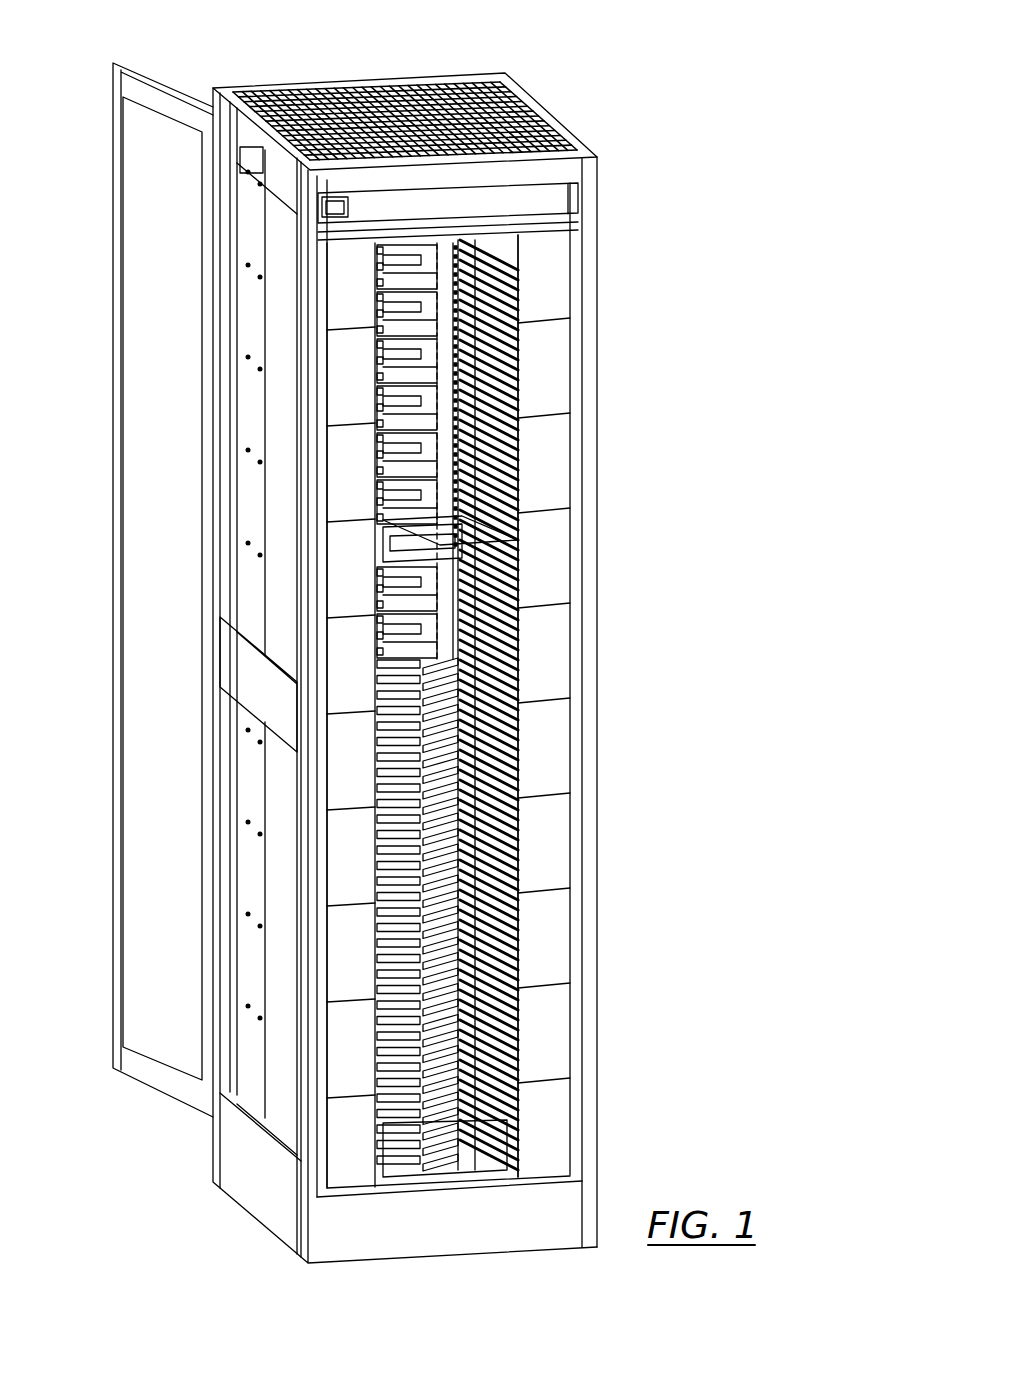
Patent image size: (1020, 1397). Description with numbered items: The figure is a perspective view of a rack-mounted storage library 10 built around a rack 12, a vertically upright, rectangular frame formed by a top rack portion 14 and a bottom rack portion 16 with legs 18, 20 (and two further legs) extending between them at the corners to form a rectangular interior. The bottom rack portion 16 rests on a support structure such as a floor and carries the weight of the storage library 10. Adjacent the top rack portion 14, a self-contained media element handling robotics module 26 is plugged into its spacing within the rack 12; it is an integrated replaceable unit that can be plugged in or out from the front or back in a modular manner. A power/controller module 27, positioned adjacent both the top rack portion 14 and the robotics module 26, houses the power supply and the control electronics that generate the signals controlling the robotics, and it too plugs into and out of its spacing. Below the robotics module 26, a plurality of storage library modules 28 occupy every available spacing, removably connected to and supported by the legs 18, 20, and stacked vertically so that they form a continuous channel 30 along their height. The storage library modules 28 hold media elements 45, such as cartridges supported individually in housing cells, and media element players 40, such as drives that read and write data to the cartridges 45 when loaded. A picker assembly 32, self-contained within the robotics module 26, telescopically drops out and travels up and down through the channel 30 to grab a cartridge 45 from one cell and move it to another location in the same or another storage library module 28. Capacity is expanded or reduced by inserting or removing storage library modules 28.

The storage library 10 is at (636, 79).
The rack 12 is at (597, 332).
The top rack portion 14 is at (587, 168).
The bottom rack portion 16 is at (580, 1228).
The leg 18 is at (312, 1100).
The leg 20 is at (597, 1064).
The media element handling robotics module 26 is at (587, 222).
The power/controller module 27 is at (352, 98).
The storage library module 28 is at (553, 760).
The channel 30 is at (431, 1148).
The picker assembly 32 is at (505, 553).
The media element player 40 is at (428, 432).
The media element 45 is at (445, 884).